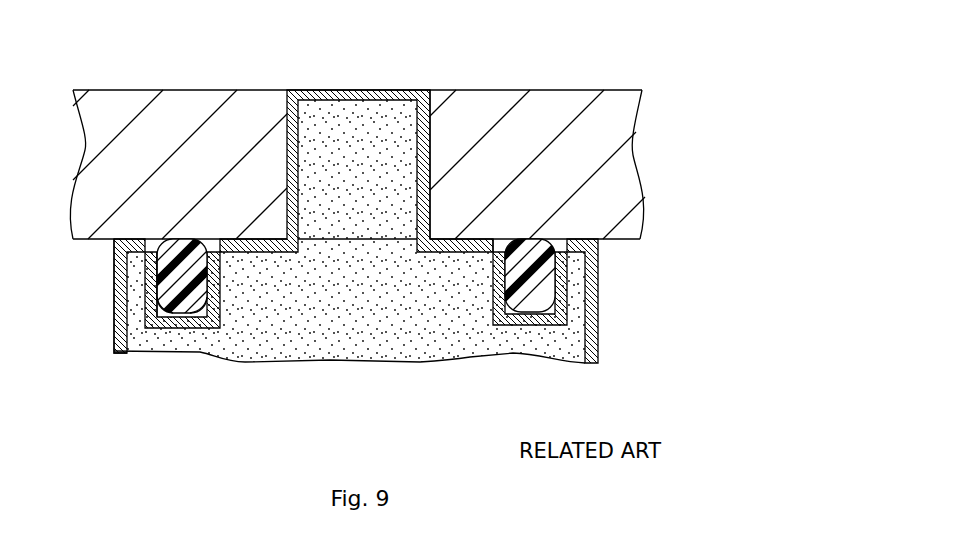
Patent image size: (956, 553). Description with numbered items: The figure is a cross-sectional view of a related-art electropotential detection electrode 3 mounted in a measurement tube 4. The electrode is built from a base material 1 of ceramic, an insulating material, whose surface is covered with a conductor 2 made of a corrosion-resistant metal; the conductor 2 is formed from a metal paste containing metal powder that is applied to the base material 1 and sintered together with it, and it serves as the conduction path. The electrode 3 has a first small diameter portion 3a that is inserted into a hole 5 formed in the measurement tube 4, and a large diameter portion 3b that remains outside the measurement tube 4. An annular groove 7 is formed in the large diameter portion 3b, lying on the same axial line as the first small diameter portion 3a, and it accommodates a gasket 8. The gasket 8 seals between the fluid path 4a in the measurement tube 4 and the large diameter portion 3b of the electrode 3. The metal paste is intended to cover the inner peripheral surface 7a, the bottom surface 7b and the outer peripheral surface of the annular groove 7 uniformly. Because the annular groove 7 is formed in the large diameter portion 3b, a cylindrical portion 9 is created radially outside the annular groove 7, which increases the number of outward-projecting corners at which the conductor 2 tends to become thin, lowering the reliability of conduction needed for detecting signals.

The base material 1 is at (366, 313).
The conductor 2 is at (382, 92).
The electropotential detection electrode 3 is at (621, 351).
The first small diameter portion 3a is at (430, 137).
The large diameter portion 3b is at (600, 292).
The measurement tube 4 is at (623, 158).
The fluid path 4a is at (584, 90).
The hole 5 is at (298, 143).
The annular groove 7 is at (198, 262).
The inner peripheral surface 7a is at (205, 317).
The bottom surface 7b is at (158, 300).
The gasket 8 is at (160, 262).
The cylindrical portion 9 is at (113, 258).